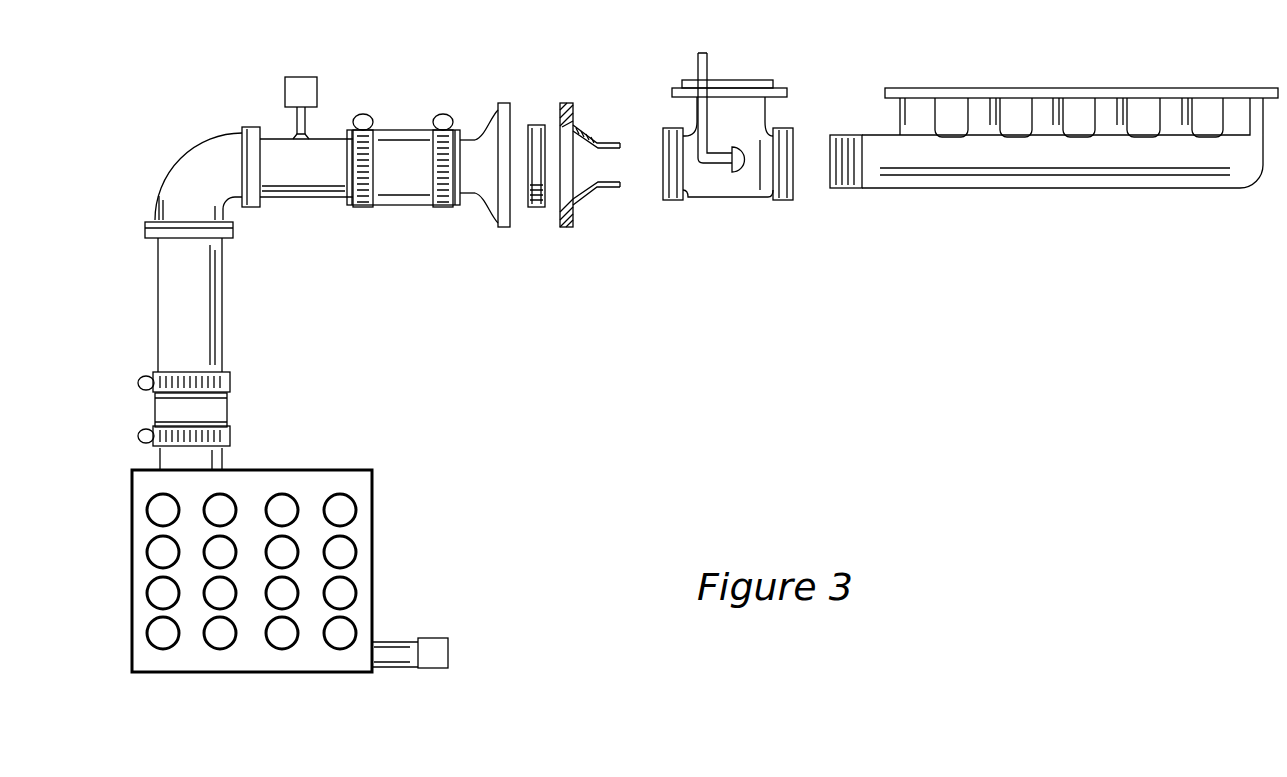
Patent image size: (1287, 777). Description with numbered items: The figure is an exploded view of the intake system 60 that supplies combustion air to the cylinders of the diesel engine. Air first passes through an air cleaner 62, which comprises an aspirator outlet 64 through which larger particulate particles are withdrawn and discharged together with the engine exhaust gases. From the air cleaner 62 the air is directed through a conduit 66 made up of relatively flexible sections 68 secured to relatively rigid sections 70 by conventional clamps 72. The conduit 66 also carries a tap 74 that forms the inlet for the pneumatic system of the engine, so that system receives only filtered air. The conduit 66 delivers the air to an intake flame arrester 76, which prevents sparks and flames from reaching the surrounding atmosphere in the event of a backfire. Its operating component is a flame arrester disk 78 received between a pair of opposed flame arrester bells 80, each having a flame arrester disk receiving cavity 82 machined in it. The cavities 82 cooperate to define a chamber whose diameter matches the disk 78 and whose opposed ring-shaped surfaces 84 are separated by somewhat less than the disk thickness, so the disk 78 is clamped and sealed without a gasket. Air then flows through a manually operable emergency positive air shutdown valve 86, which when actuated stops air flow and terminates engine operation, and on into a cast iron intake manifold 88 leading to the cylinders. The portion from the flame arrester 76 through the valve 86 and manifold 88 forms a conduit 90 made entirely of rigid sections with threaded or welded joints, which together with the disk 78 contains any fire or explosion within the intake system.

The intake system 60 is at (135, 167).
The air cleaner 62 is at (143, 573).
The aspirator outlet 64 is at (400, 653).
The conduit 66 is at (137, 303).
The flexible section 68 is at (412, 170).
The rigid section 70 is at (302, 175).
The clamp 72 is at (362, 117).
The tap 74 is at (295, 122).
The intake flame arrester 76 is at (523, 90).
The flame arrester disk 78 is at (537, 207).
The flame arrester bell 80 is at (490, 142).
The flame arrester disk receiving cavity 82 is at (582, 203).
The ring-shaped surface 84 is at (585, 133).
The emergency positive air shutdown valve 86 is at (685, 62).
The intake manifold 88 is at (1043, 153).
The conduit 90 is at (757, 208).